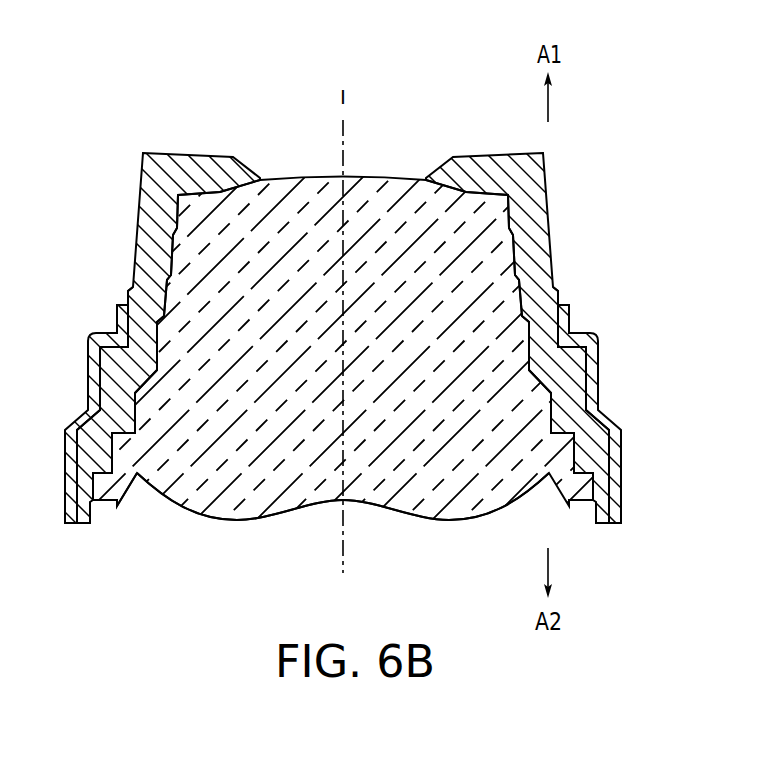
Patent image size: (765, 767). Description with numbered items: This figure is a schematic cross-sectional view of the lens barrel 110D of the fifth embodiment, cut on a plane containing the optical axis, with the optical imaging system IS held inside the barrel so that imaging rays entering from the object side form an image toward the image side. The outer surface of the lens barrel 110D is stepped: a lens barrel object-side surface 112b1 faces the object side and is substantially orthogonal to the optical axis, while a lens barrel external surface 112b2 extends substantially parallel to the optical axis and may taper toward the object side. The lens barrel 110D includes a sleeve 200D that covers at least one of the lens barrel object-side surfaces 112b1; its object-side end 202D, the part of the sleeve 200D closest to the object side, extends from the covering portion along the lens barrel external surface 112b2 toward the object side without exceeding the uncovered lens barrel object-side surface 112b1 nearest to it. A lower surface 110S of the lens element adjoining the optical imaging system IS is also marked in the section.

The lens barrel 110D is at (533, 188).
The sleeve 200D is at (598, 373).
The lens barrel object-side surface 112b1 is at (128, 291).
The lens barrel external surface 112b2 is at (557, 292).
The object-side end 202D is at (564, 305).
The lens lower surface 110S is at (146, 503).
The optical imaging system IS is at (458, 506).